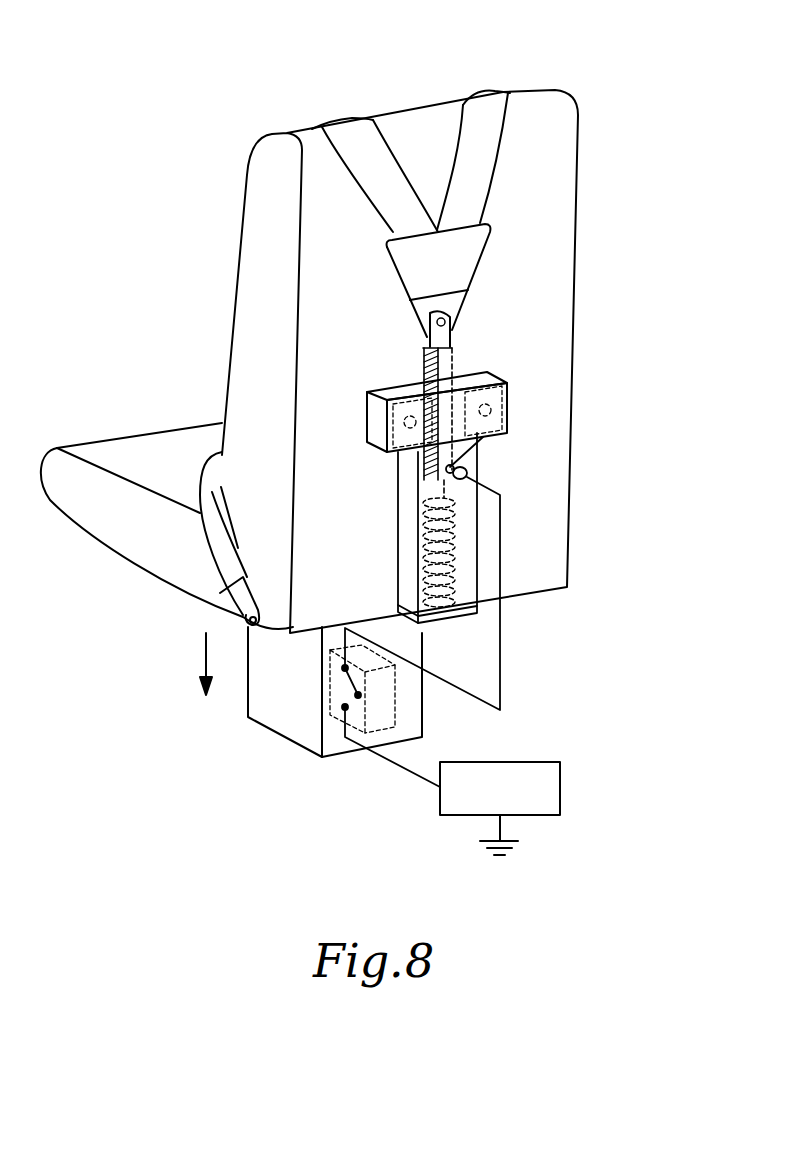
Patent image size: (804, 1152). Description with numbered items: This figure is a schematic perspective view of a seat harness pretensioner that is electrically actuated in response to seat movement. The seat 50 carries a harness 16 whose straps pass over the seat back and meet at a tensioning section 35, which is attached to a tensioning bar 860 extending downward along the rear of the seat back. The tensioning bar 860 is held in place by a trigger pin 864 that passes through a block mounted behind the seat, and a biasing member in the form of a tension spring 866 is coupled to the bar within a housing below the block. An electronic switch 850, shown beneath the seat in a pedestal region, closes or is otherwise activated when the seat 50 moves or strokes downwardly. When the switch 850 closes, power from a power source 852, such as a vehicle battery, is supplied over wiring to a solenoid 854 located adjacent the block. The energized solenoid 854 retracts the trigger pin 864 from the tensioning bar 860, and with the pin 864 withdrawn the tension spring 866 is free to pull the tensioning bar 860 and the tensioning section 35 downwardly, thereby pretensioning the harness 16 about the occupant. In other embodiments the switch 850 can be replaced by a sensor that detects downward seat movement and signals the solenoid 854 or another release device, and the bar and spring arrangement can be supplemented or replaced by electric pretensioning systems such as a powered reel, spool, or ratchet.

The harness 16 is at (487, 105).
The seat 50 is at (557, 157).
The tensioning section 35 is at (457, 303).
The tensioning bar 860 is at (457, 363).
The trigger pin 864 is at (488, 428).
The solenoid 854 is at (468, 477).
The tension spring 866 is at (430, 556).
The electronic switch 850 is at (327, 685).
The power source 852 is at (548, 762).